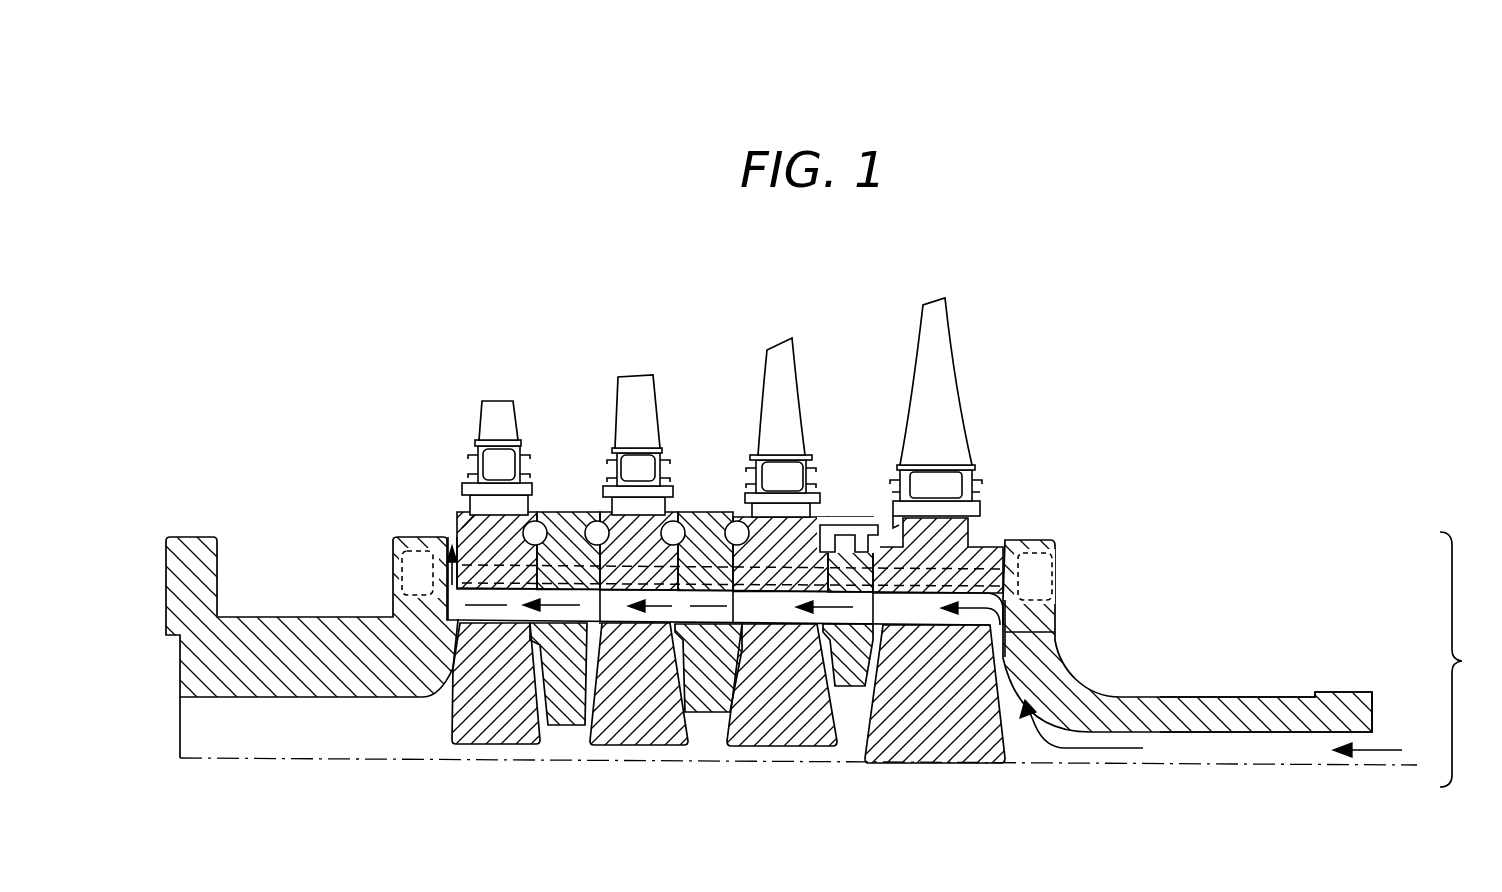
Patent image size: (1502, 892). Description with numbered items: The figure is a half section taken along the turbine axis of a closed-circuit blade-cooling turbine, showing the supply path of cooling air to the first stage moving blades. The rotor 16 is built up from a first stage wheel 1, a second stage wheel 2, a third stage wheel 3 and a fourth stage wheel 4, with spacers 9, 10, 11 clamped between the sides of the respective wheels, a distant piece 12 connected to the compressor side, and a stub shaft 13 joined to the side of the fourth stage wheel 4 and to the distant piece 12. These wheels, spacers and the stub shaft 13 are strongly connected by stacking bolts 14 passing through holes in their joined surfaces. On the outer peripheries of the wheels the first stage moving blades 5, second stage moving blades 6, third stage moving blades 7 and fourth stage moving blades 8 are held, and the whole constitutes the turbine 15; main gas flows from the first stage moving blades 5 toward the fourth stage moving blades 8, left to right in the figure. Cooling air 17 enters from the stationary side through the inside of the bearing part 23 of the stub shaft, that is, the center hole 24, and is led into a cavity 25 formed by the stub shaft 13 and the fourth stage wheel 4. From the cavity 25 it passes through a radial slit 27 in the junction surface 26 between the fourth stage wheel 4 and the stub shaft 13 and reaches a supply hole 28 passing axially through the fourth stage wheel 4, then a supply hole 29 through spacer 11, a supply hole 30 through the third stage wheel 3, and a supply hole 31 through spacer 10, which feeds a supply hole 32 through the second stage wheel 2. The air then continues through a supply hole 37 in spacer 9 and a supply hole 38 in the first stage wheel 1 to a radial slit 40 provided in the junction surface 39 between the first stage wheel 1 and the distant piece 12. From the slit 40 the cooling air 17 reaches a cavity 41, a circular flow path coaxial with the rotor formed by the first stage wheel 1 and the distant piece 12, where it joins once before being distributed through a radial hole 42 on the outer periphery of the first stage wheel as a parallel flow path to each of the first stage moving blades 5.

The first stage wheel 1 is at (470, 737).
The second stage wheel 2 is at (613, 740).
The third stage wheel 3 is at (752, 745).
The fourth stage wheel 4 is at (905, 745).
The first stage moving blades 5 is at (480, 412).
The second stage moving blades 6 is at (617, 390).
The third stage moving blades 7 is at (765, 372).
The fourth stage moving blades 8 is at (920, 330).
The spacer 9 is at (575, 725).
The spacer 10 is at (697, 712).
The spacer 11 is at (848, 686).
The distant piece 12 is at (262, 630).
The stub shaft 13 is at (1090, 690).
The stacking bolts 14 is at (1053, 575).
The turbine 15 is at (1078, 402).
The rotor 16 is at (1471, 659).
The cooling air 17 is at (1390, 750).
The bearing part 23 is at (1235, 697).
The center hole 24 is at (1197, 750).
The cavity 25 is at (1030, 750).
The junction surface 26 is at (1055, 606).
The slit 27 is at (1040, 634).
The supply hole 28 is at (915, 615).
The supply hole 29 is at (848, 540).
The supply hole 30 is at (773, 615).
The supply hole 31 is at (715, 620).
The supply hole 32 is at (650, 620).
The supply hole 37 is at (557, 615).
The supply hole 38 is at (488, 620).
The junction surface 39 is at (398, 545).
The slit 40 is at (447, 597).
The cavity 41 is at (455, 530).
The hole 42 is at (518, 500).